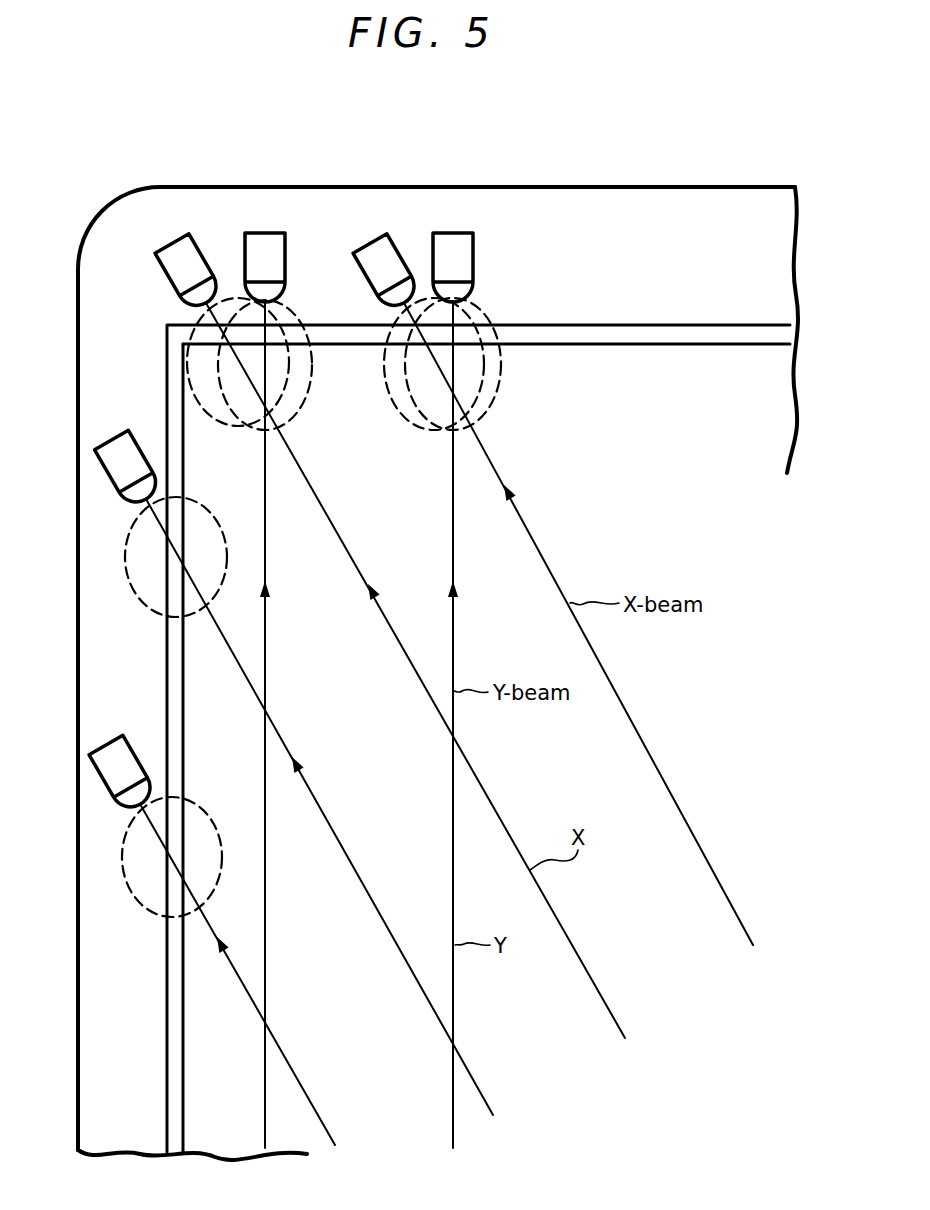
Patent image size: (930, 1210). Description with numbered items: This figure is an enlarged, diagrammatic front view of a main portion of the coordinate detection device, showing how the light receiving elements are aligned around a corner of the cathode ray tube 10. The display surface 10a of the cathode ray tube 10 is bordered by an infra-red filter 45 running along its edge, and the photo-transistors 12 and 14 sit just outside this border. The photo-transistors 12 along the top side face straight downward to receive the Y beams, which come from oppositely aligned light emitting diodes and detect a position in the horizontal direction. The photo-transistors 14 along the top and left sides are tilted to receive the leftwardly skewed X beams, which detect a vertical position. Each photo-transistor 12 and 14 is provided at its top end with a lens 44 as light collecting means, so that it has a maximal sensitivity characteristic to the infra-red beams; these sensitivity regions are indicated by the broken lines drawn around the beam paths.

The cathode ray tube 10 is at (397, 188).
The display surface 10a is at (712, 366).
The photo-transistor 12 is at (285, 246).
The photo-transistor 14 is at (198, 242).
The lens 44 is at (187, 298).
The infra-red filter 45 is at (633, 325).